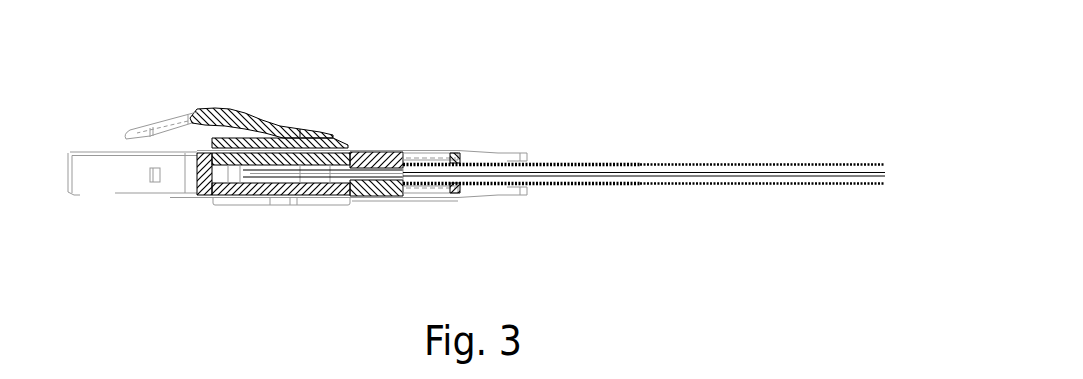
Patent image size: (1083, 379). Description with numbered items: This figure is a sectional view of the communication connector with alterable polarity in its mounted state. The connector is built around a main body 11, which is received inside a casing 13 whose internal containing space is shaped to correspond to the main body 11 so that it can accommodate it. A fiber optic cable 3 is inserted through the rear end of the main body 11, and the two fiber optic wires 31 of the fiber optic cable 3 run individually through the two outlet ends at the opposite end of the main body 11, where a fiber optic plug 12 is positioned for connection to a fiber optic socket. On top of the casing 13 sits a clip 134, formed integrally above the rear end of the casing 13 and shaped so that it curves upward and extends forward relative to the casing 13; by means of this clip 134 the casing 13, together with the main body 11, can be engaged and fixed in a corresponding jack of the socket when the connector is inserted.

The fiber optic cable 3 is at (598, 166).
The main body 11 is at (321, 183).
The fiber optic plug 12 is at (127, 183).
The casing 13 is at (329, 133).
The fiber optic wire 31 is at (252, 183).
The clip 134 is at (216, 96).